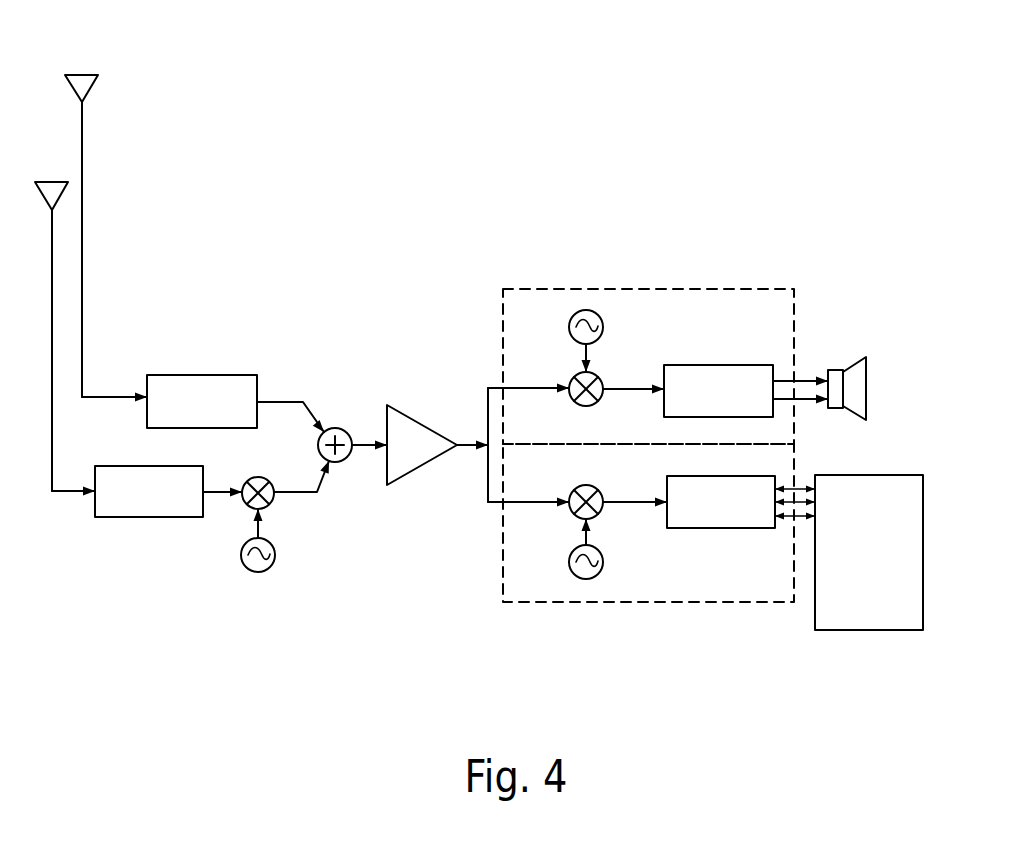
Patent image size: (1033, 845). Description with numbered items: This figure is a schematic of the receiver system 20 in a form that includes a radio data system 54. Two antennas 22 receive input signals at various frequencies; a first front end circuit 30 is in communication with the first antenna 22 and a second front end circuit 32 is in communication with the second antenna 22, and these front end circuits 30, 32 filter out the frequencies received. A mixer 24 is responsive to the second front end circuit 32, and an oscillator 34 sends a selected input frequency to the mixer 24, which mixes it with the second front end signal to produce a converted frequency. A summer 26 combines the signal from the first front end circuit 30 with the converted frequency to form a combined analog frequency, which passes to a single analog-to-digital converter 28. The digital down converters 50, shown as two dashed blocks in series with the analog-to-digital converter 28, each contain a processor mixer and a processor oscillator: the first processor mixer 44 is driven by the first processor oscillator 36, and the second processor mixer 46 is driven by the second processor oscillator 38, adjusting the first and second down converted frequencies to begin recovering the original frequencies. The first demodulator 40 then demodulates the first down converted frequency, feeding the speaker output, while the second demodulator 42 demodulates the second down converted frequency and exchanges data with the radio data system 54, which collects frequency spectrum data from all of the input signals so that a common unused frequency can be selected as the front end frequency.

The system 20 is at (440, 160).
The antenna 22 is at (51, 182).
The mixer 24 is at (260, 477).
The summer 26 is at (338, 428).
The analog-to-digital converter 28 is at (405, 430).
The first front end circuit 30 is at (235, 403).
The second front end circuit 32 is at (168, 491).
The oscillator 34 is at (241, 556).
The first processor oscillator 36 is at (603, 327).
The second processor oscillator 38 is at (569, 563).
The first demodulator 40 is at (746, 391).
The second demodulator 42 is at (741, 502).
The first processor mixer 44 is at (587, 405).
The second processor mixer 46 is at (588, 485).
The digital down converters 50 is at (677, 275).
The radio data system 54 is at (815, 558).